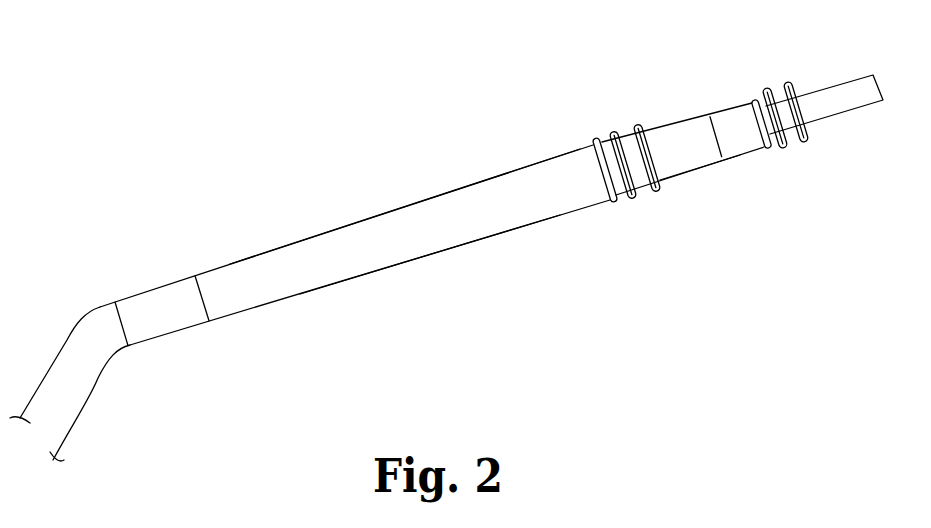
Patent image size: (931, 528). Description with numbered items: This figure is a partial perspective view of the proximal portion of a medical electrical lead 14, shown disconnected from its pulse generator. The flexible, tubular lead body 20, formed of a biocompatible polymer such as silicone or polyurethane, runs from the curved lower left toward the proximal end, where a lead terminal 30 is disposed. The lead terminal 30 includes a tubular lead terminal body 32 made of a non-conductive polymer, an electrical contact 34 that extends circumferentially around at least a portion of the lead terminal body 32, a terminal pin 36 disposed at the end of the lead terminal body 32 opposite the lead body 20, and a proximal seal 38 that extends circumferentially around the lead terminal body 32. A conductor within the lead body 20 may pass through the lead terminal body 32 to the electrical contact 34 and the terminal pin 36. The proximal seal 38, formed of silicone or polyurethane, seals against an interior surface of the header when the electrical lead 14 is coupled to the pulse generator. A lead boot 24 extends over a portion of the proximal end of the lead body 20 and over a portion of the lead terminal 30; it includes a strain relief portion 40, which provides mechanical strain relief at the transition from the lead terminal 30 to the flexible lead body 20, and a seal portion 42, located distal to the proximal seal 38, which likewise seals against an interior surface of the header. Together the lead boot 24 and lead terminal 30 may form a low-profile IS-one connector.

The electrical lead 14 is at (238, 258).
The lead body 20 is at (68, 334).
The lead boot 24 is at (408, 204).
The lead terminal 30 is at (682, 157).
The lead terminal body 32 is at (714, 102).
The electrical contact 34 is at (695, 169).
The terminal pin 36 is at (823, 105).
The proximal seal 38 is at (788, 88).
The strain relief portion 40 is at (400, 266).
The seal portion 42 is at (634, 197).